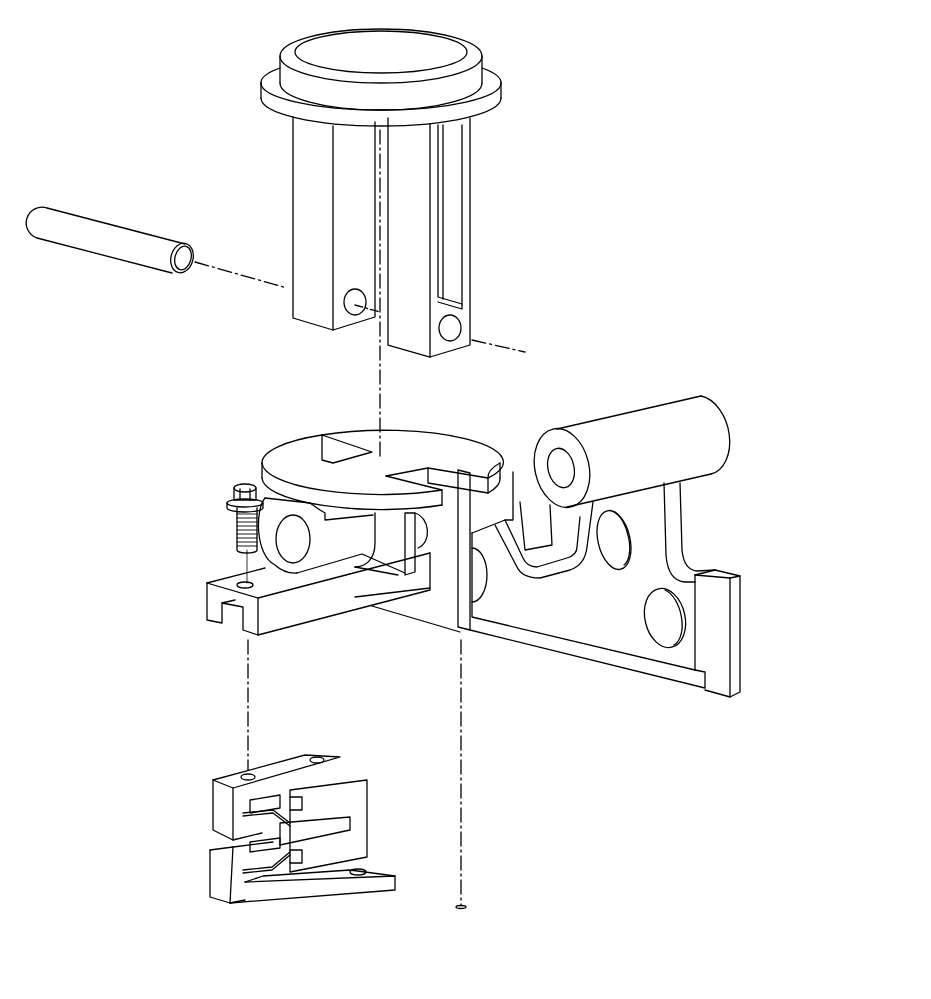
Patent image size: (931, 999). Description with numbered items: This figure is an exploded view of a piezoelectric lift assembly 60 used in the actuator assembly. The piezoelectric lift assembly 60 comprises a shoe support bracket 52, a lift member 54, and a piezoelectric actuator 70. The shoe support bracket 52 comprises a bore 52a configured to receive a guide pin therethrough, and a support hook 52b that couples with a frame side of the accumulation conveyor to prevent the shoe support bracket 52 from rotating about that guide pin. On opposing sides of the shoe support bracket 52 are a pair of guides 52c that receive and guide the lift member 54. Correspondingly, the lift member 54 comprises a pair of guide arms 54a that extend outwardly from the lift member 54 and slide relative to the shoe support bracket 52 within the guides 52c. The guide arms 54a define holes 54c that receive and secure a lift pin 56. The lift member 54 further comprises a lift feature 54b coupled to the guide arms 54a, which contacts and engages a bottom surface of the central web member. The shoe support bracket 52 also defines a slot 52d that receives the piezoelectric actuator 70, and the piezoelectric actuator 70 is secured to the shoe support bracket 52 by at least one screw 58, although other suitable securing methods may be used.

The piezoelectric lift assembly 60 is at (642, 101).
The lift member 54 is at (466, 175).
The guide arms 54a is at (310, 185).
The lift feature 54b is at (475, 55).
The holes 54c is at (452, 328).
The lift pin 56 is at (95, 235).
The shoe support bracket 52 is at (643, 420).
The bore 52a is at (298, 543).
The support hook 52b is at (746, 603).
The guides 52c is at (335, 446).
The slot 52d is at (232, 612).
The screw 58 is at (240, 488).
The piezoelectric actuator 70 is at (300, 908).